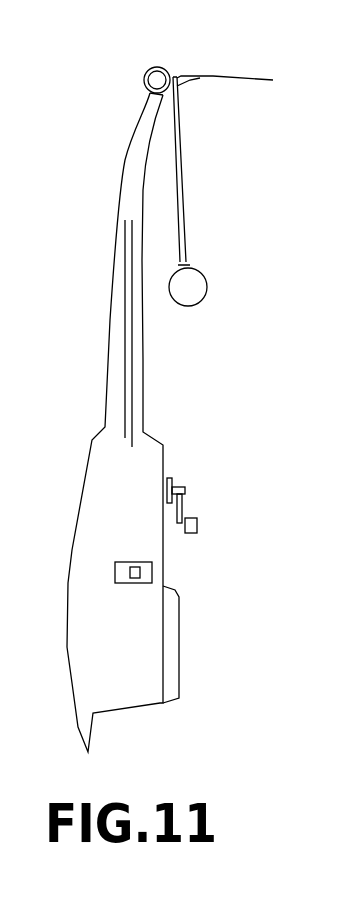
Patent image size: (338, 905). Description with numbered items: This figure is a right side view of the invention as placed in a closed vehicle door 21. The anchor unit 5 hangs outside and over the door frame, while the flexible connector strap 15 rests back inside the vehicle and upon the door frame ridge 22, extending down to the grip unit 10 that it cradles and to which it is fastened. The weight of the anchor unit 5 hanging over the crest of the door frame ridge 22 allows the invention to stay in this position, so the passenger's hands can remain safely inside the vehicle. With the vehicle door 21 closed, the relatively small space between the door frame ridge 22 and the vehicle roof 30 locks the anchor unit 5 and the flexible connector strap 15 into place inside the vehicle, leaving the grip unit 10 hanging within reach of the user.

The anchor unit 5 is at (143, 72).
The grip unit 10 is at (190, 287).
The flexible connector strap 15 is at (188, 191).
The vehicle door 21 is at (132, 422).
The door frame ridge 22 is at (157, 97).
The vehicle roof 30 is at (244, 80).